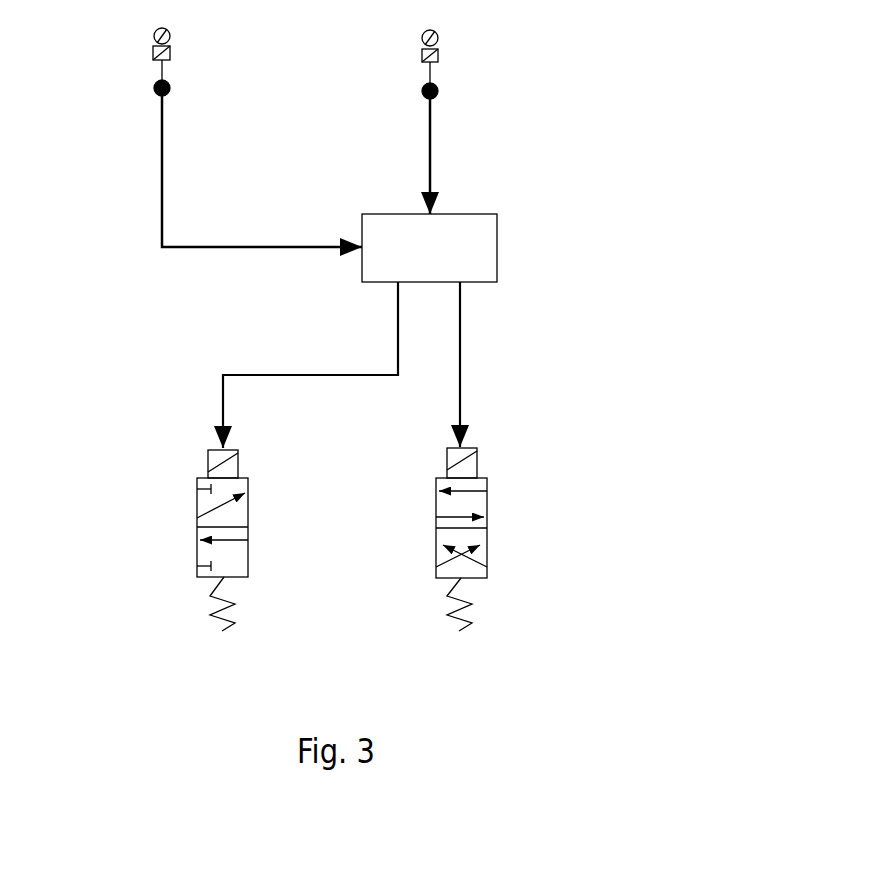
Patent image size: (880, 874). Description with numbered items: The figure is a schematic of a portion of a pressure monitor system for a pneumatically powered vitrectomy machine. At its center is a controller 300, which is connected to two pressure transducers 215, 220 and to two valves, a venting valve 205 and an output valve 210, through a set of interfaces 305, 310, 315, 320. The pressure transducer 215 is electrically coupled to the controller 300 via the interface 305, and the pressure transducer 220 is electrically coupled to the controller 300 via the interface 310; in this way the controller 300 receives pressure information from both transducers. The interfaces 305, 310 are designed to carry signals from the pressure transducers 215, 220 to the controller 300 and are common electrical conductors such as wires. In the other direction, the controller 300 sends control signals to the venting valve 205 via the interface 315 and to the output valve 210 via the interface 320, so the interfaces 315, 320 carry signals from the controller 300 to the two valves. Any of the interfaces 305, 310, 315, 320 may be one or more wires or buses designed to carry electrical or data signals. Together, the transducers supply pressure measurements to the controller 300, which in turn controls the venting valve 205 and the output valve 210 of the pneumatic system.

The venting valve 205 is at (195, 528).
The output valve 210 is at (490, 530).
The pressure transducer 215 is at (173, 32).
The pressure transducer 220 is at (442, 33).
The controller 300 is at (409, 261).
The interface 305 is at (195, 248).
The interface 310 is at (437, 152).
The interface 315 is at (222, 393).
The interface 320 is at (462, 353).